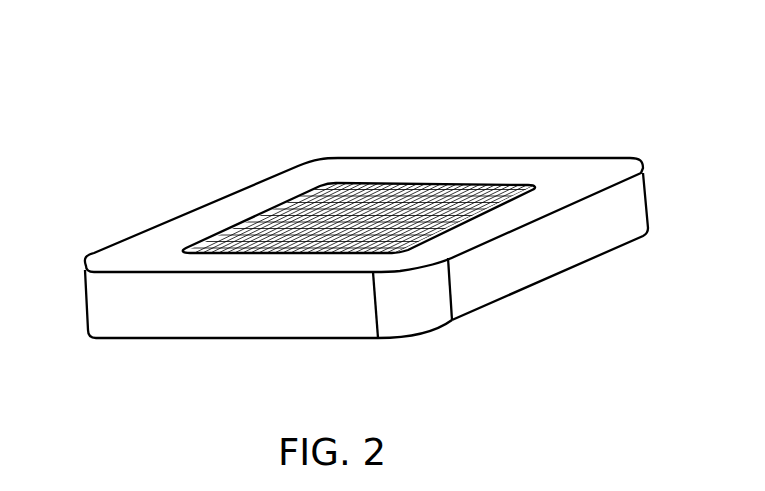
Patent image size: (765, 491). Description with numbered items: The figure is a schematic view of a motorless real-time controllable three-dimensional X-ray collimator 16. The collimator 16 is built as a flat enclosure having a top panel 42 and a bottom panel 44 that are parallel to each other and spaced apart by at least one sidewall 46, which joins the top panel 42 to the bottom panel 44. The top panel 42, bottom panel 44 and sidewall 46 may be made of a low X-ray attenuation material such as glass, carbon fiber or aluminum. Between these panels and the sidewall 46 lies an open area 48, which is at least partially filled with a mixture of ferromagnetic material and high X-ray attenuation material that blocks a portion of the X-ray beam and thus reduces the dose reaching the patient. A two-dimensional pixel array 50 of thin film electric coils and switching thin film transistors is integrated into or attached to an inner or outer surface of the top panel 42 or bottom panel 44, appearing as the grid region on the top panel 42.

The motorless real-time controllable 3D X-ray collimator 16 is at (522, 92).
The top panel 42 is at (604, 170).
The bottom panel 44 is at (197, 340).
The sidewall 46 is at (99, 303).
The open area 48 is at (319, 324).
The two-dimensional pixel array 50 is at (363, 218).